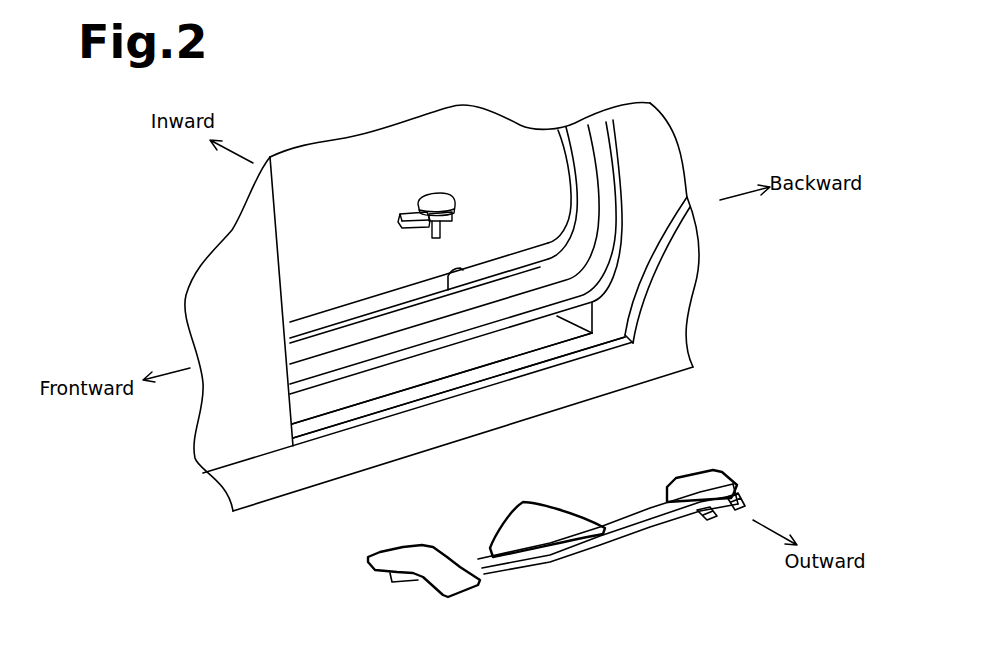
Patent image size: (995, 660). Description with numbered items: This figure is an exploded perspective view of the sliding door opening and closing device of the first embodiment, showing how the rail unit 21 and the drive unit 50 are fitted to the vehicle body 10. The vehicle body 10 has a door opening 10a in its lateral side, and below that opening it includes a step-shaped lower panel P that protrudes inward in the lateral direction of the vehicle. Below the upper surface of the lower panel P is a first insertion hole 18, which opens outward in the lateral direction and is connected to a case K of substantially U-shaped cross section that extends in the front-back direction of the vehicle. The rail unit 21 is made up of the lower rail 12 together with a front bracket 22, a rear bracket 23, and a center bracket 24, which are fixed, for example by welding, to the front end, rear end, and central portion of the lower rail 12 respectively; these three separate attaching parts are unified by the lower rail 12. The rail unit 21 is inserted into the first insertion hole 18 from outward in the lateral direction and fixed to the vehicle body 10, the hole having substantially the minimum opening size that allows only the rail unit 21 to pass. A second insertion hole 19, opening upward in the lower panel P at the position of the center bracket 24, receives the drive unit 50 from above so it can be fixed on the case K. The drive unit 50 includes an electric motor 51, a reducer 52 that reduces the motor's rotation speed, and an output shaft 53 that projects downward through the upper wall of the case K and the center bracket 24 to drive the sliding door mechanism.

The vehicle body 10 is at (289, 490).
The door opening 10a is at (560, 158).
The lower rail 12 is at (617, 543).
The first insertion hole 18 is at (294, 396).
The second insertion hole 19 is at (430, 290).
The rail unit 21 is at (556, 517).
The front bracket 22 is at (397, 557).
The rear bracket 23 is at (700, 482).
The center bracket 24 is at (550, 508).
The drive unit 50 is at (422, 202).
The electric motor 51 is at (407, 228).
The reducer 52 is at (433, 203).
The output shaft 53 is at (442, 229).
The lower panel P is at (342, 316).
The case K is at (441, 372).